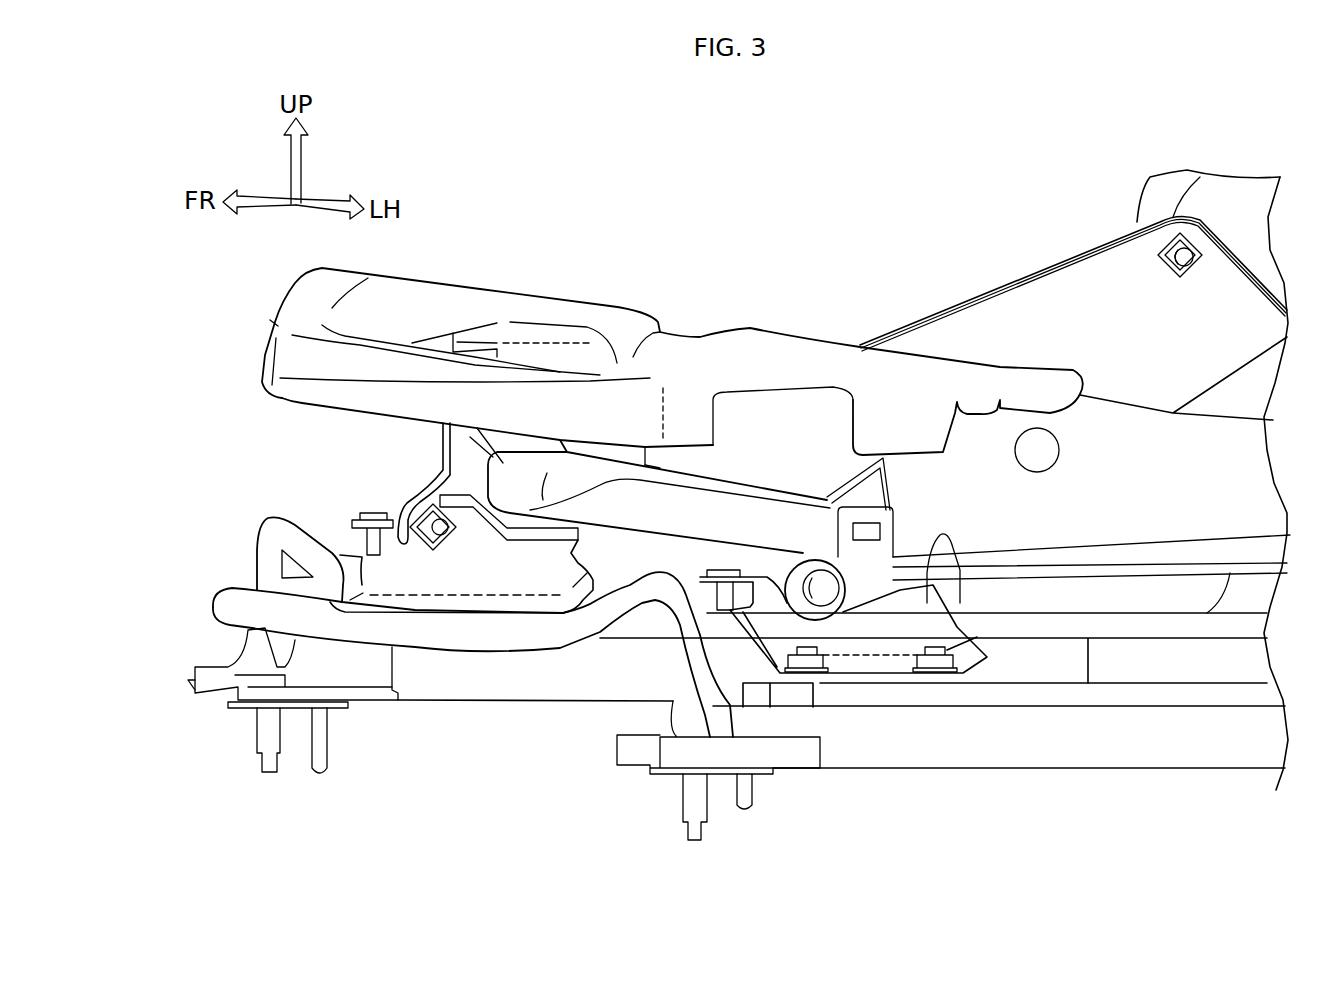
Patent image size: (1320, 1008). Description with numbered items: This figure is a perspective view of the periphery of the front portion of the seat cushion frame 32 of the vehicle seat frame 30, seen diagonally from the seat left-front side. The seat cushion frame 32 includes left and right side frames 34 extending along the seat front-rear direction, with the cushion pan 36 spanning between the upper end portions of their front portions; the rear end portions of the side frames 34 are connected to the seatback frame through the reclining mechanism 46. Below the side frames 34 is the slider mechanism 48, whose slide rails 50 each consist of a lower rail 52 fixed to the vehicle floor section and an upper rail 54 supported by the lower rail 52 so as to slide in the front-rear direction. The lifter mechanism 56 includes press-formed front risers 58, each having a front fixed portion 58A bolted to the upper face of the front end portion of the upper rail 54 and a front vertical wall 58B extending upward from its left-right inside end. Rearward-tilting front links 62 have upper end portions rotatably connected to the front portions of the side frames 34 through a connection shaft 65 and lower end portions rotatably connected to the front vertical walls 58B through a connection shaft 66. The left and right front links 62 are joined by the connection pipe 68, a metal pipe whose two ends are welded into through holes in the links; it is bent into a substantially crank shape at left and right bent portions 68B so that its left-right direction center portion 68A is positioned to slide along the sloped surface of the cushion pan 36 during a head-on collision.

The vehicle seat frame 30 is at (660, 210).
The seat cushion frame 32 is at (765, 305).
The side frames 34 is at (980, 318).
The cushion pan 36 is at (272, 346).
The reclining mechanism 46 is at (1105, 180).
The slider mechanism 48 is at (1225, 792).
The slide rails 50 is at (595, 703).
The lower rail 52 is at (628, 650).
The upper rail 54 is at (1153, 700).
The lifter mechanism 56 is at (305, 483).
The front risers 58 is at (453, 606).
The front fixed portion 58A is at (847, 673).
The front vertical wall 58B is at (528, 570).
The front links 62 is at (430, 465).
The connection shaft 65 is at (1040, 462).
The connection shaft 66 is at (420, 520).
The connection pipe 68 is at (757, 495).
The left-right direction center portion 68A is at (673, 495).
The bent portions 68B is at (580, 475).